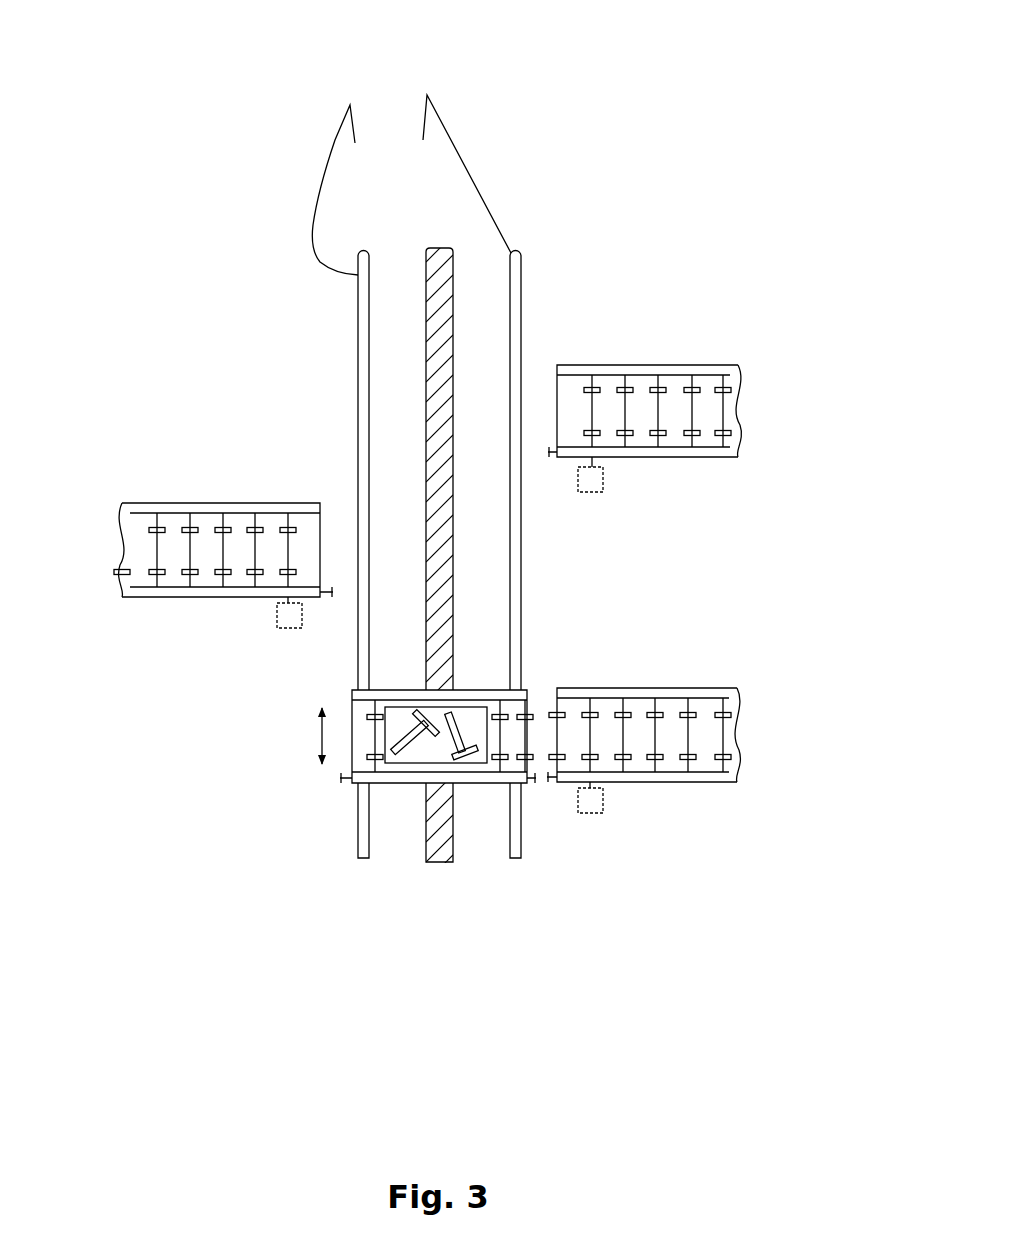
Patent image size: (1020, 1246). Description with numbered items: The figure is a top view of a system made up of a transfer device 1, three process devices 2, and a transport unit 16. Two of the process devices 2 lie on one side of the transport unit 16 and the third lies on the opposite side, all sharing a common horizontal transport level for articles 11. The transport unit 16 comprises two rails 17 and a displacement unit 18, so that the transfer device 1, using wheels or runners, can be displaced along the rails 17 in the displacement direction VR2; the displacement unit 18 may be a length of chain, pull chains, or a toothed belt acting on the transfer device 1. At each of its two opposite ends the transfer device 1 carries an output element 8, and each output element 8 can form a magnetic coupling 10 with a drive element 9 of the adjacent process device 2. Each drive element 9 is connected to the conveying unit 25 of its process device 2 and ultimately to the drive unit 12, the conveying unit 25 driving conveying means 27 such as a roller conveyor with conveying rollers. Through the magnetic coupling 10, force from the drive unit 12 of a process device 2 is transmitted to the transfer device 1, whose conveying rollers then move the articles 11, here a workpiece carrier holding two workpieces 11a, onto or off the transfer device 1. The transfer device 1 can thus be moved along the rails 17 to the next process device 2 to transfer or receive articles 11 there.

The transfer device 1 is at (297, 792).
The process device 2 is at (435, 626).
The output element 8 is at (343, 797).
The drive element 9 is at (330, 608).
The magnetic coupling 10 is at (543, 803).
The articles 11 is at (460, 768).
The workpieces 11a is at (403, 753).
The drive unit 12 is at (277, 613).
The transport unit 16 is at (503, 147).
The rails 17 is at (355, 143).
The displacement unit 18 is at (427, 335).
The conveying unit 25 is at (313, 523).
The conveying means 27 is at (238, 518).
The displacement direction VR2 is at (322, 740).